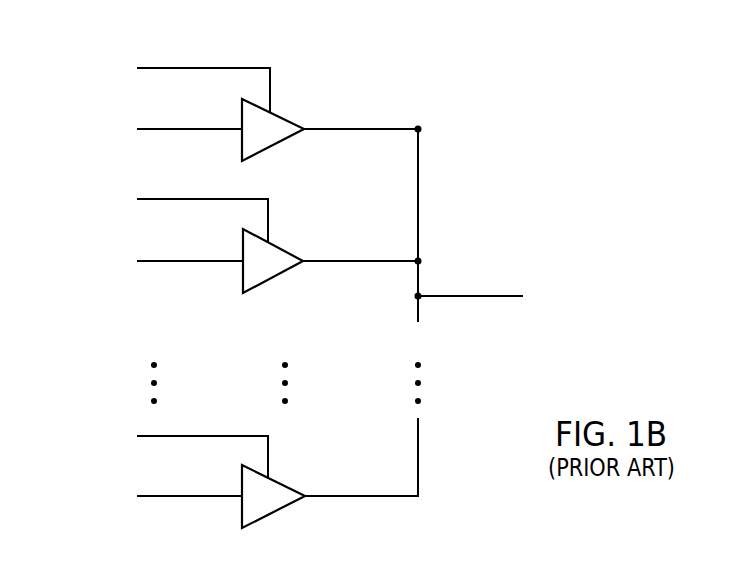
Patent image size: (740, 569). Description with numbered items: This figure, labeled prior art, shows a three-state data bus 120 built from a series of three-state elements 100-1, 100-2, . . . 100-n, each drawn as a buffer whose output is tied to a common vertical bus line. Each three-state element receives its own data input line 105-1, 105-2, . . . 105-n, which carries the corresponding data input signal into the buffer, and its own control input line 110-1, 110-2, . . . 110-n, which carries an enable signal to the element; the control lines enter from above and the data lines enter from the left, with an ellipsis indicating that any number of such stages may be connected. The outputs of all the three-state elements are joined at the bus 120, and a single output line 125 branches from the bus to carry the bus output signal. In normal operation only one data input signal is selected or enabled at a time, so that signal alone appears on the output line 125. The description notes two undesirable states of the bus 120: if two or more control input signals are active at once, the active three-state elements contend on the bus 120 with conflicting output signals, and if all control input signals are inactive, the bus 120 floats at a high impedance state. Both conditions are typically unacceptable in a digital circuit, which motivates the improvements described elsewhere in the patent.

The three-state element 100-1 is at (377, 106).
The three-state element 100-2 is at (382, 239).
The three-state element 100-n is at (385, 477).
The data input line 105-1 is at (146, 130).
The data input line 105-2 is at (146, 262).
The data input line 105-n is at (146, 497).
The control input line 110-1 is at (159, 68).
The control input line 110-2 is at (198, 199).
The control input line 110-n is at (146, 436).
The bus 120 is at (493, 89).
The output line 125 is at (483, 293).